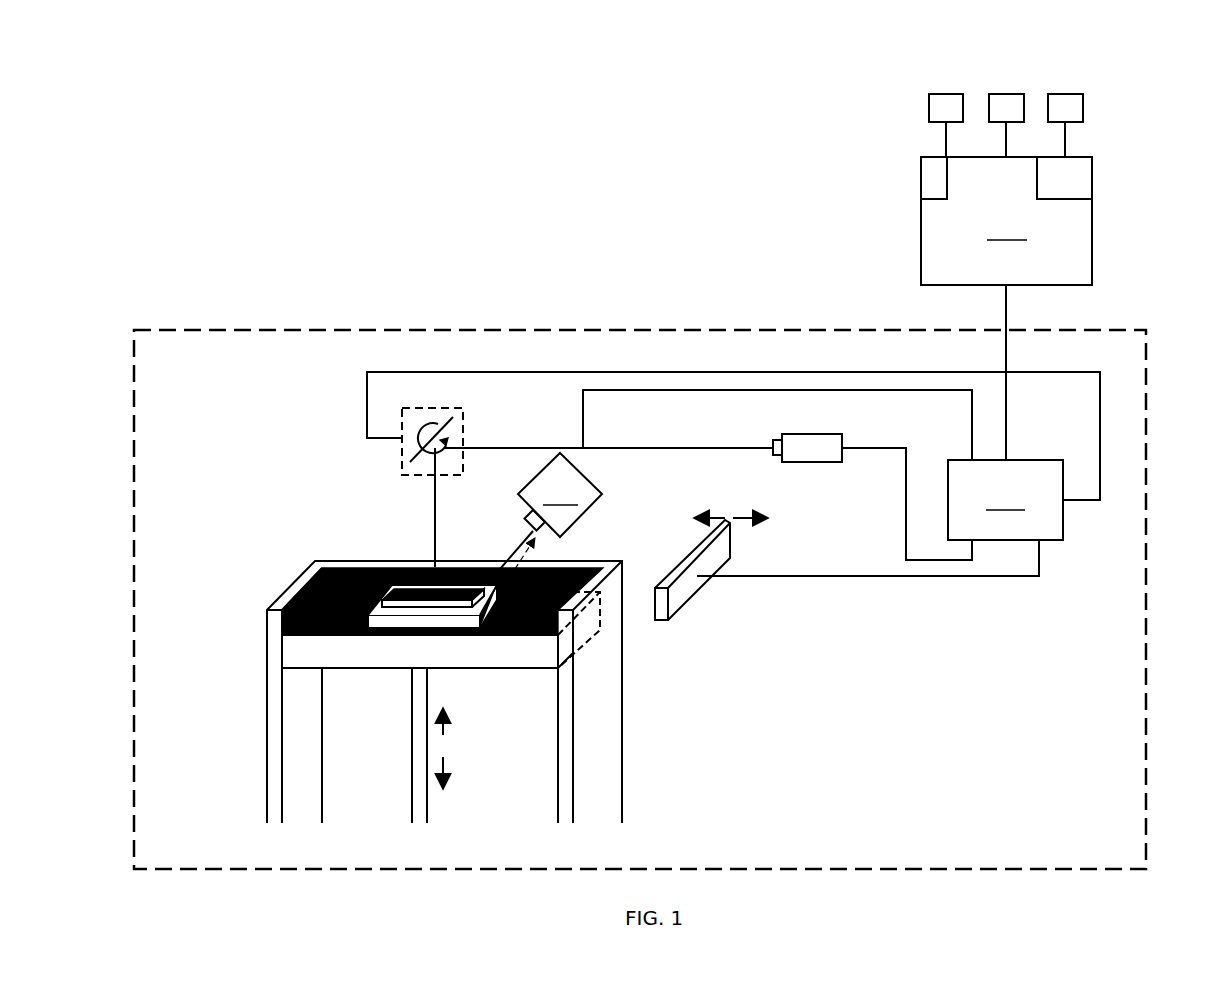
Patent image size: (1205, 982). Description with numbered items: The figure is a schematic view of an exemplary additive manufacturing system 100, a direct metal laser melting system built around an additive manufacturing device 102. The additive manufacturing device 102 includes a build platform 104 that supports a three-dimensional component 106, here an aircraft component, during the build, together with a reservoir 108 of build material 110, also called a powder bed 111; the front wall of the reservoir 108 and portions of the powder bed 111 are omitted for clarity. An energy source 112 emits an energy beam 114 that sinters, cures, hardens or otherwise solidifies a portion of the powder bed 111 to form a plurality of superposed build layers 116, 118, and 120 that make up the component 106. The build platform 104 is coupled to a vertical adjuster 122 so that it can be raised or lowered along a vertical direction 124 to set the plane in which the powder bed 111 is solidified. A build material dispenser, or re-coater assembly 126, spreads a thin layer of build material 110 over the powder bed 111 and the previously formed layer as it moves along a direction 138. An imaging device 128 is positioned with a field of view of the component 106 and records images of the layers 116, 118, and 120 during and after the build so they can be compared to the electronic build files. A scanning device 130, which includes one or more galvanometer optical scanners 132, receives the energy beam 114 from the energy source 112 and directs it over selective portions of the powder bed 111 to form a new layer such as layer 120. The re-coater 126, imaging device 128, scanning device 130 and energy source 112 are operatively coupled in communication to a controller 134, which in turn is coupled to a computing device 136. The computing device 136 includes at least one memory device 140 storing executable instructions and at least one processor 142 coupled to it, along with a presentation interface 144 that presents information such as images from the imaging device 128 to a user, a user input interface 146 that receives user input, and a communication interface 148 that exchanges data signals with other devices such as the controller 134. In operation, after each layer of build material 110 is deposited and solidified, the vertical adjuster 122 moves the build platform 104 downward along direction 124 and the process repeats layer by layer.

The additive manufacturing system 100 is at (1096, 47).
The additive manufacturing device 102 is at (133, 437).
The build platform 104 is at (528, 658).
The three-dimensional component 106 is at (376, 630).
The reservoir 108 is at (609, 697).
The build material 110 is at (293, 597).
The powder bed 111 is at (333, 562).
The energy source 112 is at (816, 463).
The energy beam 114 is at (653, 452).
The build layer 116 is at (408, 620).
The build layer 118 is at (438, 618).
The build layer 120 is at (446, 620).
The vertical adjuster 122 is at (412, 790).
The vertical direction 124 is at (433, 773).
The re-coater assembly 126 is at (676, 602).
The imaging device 128 is at (544, 519).
The scanning device 130 is at (402, 456).
The galvanometer optical scanner 132 is at (453, 418).
The controller 134 is at (733, 474).
The computing device 136 is at (1006, 308).
The direction 138 is at (748, 520).
The memory device 140 is at (921, 180).
The processor 142 is at (1092, 180).
The presentation interface 144 is at (946, 94).
The user input interface 146 is at (1006, 94).
The communication interface 148 is at (1083, 100).